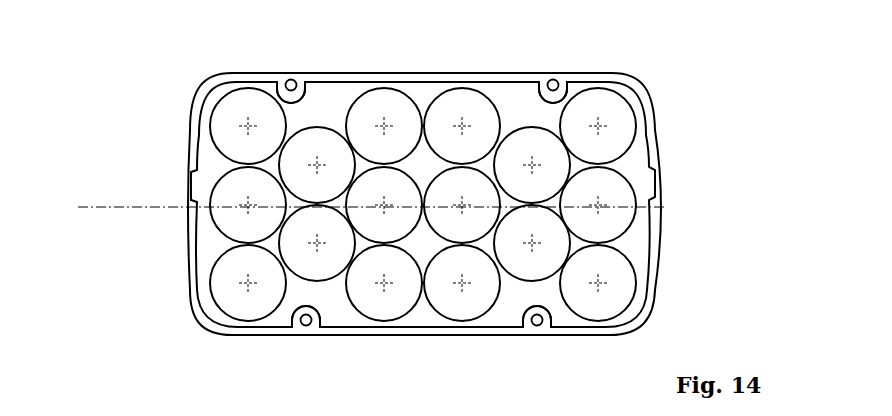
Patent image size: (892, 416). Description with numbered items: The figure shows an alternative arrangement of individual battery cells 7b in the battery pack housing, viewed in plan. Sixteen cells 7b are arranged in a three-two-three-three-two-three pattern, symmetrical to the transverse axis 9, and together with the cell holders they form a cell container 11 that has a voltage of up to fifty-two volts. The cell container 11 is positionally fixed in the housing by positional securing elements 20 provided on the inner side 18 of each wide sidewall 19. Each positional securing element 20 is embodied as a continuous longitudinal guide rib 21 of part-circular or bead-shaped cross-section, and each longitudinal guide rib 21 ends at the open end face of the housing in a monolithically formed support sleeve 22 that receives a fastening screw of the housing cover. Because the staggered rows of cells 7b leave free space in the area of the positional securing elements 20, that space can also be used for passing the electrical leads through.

The battery cell 7b is at (613, 257).
The transverse axis 9 is at (98, 207).
The cell container 11 is at (640, 252).
The inner side 18 is at (377, 320).
The sidewall 19 is at (433, 72).
The positional securing element 20 is at (314, 109).
The longitudinal guide rib 21 is at (280, 89).
The support sleeve 22 is at (284, 76).